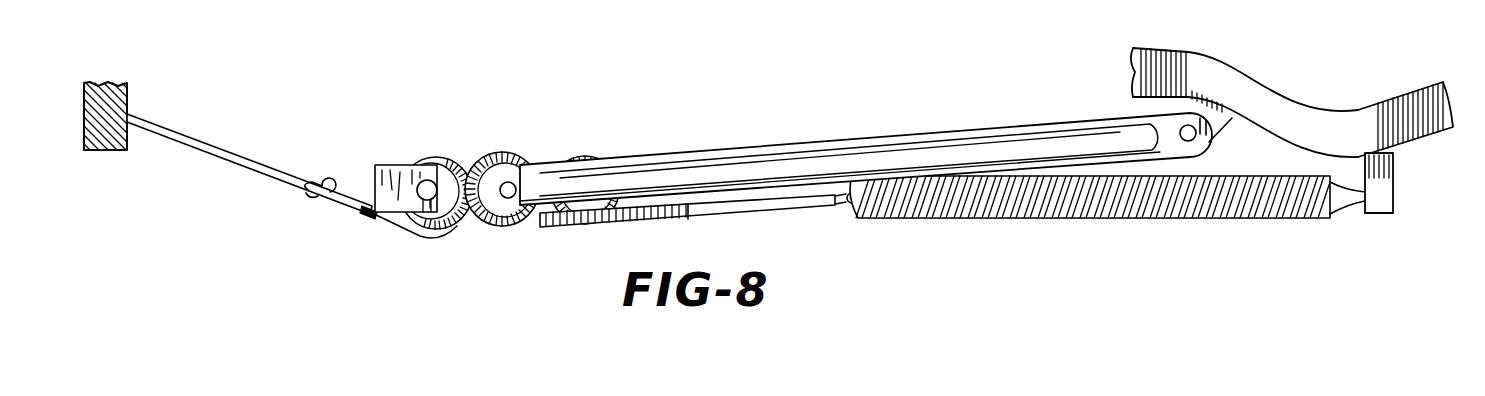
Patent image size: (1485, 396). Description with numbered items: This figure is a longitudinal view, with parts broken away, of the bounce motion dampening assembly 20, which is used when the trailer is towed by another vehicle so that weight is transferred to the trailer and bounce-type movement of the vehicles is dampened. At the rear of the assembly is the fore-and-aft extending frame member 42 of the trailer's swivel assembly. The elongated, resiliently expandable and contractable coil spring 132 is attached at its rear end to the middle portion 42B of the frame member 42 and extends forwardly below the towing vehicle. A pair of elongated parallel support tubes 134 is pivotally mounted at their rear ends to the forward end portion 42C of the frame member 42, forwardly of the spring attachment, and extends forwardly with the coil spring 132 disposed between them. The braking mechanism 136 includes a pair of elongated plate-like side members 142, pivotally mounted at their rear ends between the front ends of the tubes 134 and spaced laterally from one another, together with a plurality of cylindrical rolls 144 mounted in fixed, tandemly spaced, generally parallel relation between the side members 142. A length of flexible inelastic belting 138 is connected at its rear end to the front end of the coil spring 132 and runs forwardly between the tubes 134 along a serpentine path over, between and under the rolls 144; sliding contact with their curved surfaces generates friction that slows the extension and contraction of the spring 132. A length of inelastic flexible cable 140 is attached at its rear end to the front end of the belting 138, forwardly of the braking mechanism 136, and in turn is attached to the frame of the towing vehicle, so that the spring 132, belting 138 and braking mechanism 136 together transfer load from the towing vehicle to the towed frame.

The bounce motion dampening assembly 20 is at (1404, 196).
The frame member 42 is at (1298, 90).
The middle portion of the frame member 42B is at (1352, 130).
The forward end portion of the frame member 42C is at (1194, 76).
The coil spring 132 is at (1268, 218).
The support tubes 134 is at (993, 103).
The braking mechanism 136 is at (403, 148).
The belting 138 is at (728, 212).
The cable 140 is at (300, 185).
The side members 142 is at (428, 165).
The rolls 144 is at (482, 217).